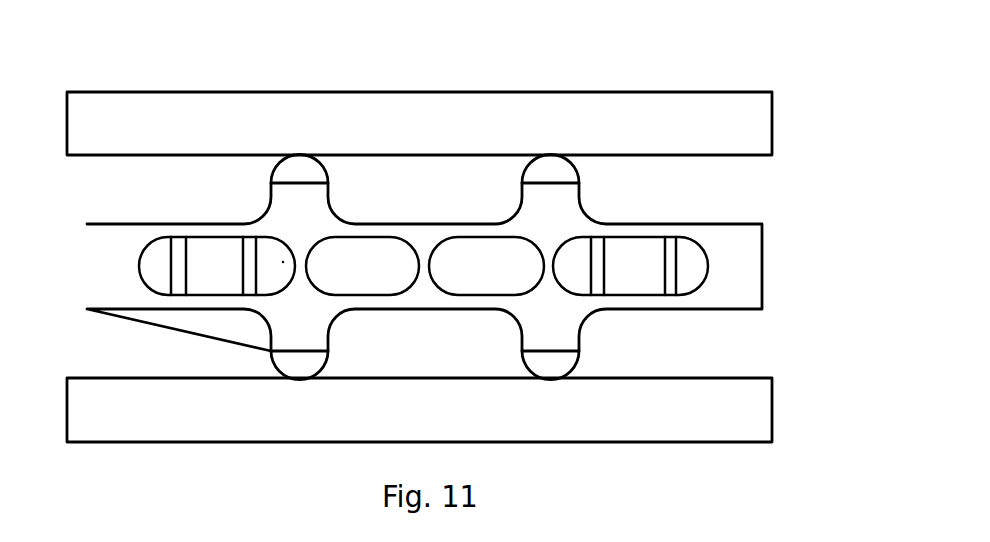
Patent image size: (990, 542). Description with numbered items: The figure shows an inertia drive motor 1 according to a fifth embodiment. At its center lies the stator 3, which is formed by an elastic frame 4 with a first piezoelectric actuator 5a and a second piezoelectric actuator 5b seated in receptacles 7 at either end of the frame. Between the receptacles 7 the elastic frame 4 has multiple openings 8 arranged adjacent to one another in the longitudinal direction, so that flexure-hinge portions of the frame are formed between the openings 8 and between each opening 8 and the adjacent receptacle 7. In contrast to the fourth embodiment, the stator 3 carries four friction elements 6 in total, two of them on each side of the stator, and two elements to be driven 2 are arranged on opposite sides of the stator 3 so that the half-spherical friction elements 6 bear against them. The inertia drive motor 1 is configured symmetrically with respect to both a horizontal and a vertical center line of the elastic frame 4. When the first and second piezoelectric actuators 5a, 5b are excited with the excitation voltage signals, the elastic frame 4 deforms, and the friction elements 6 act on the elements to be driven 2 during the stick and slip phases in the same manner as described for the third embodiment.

The inertia drive motor 1 is at (525, 237).
The element to be driven 2 is at (740, 108).
The stator 3 is at (485, 206).
The elastic frame 4 is at (732, 278).
The first piezoelectric actuator 5a is at (210, 260).
The second piezoelectric actuator 5b is at (630, 268).
The friction element 6 is at (296, 168).
The receptacle 7 is at (283, 262).
The opening 8 is at (368, 247).